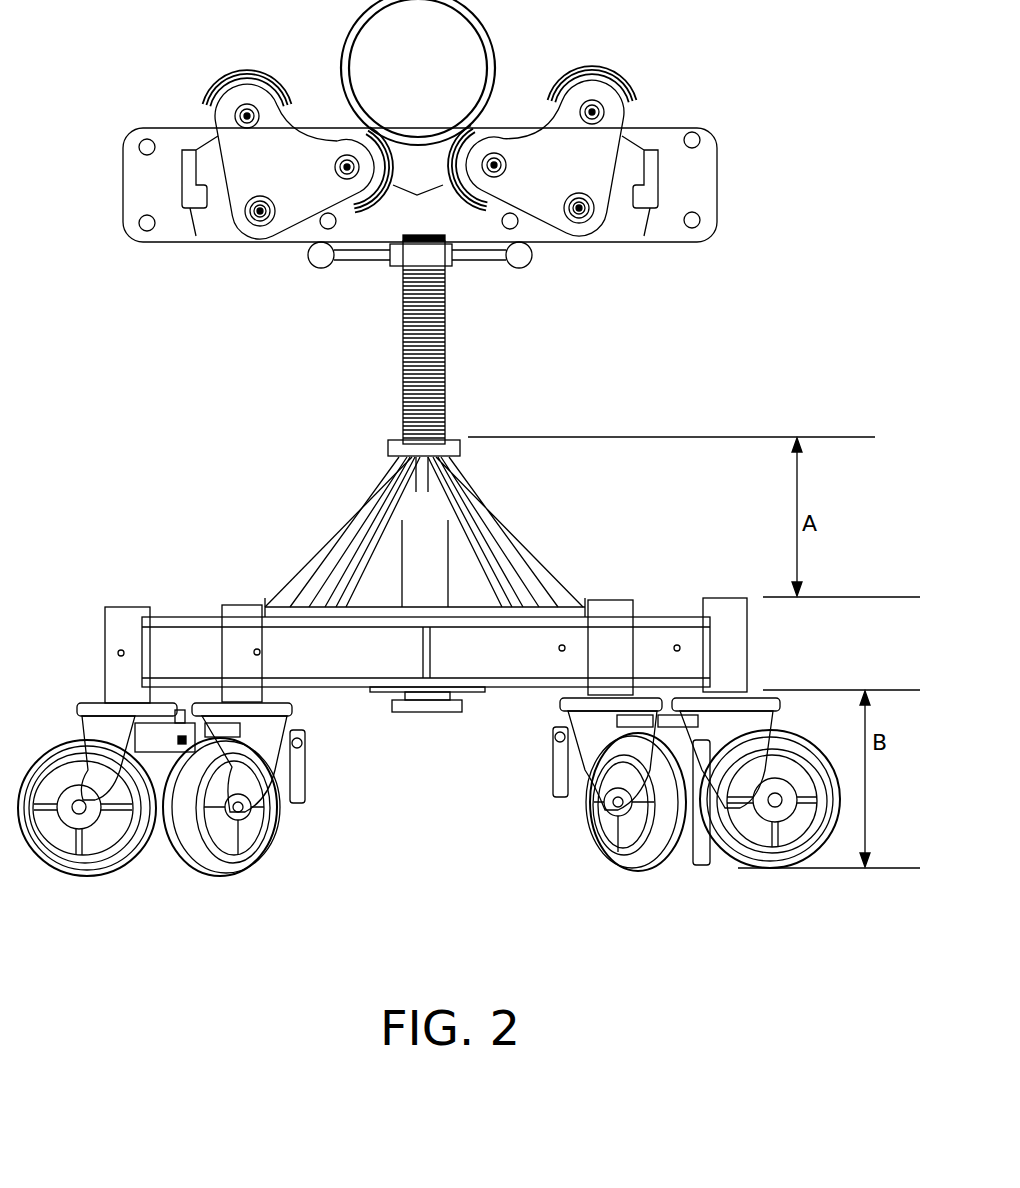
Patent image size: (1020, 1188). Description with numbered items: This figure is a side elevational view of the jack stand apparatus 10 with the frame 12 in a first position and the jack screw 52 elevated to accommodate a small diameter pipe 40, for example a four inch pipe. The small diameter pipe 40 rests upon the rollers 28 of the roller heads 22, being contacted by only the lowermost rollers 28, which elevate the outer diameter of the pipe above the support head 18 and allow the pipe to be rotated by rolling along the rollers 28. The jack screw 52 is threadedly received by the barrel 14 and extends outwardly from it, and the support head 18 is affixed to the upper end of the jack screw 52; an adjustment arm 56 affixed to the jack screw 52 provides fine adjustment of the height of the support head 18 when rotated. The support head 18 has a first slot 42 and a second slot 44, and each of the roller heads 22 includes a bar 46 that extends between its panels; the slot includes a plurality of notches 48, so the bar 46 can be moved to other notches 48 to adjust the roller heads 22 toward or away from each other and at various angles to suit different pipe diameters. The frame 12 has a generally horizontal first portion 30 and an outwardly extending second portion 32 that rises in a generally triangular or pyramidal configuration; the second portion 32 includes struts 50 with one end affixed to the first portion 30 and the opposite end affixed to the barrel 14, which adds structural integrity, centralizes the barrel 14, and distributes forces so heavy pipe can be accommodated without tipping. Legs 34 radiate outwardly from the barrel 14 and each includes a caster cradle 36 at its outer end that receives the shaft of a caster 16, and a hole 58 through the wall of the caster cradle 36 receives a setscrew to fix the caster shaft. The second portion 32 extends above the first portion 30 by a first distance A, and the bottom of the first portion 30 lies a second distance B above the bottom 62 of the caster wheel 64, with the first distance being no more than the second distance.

The jack stand apparatus 10 is at (688, 330).
The frame 12 is at (668, 612).
The barrel 14 is at (425, 537).
The caster 16 is at (128, 868).
The support head 18 is at (621, 242).
The roller heads 22 is at (419, 159).
The rollers 28 is at (333, 122).
The first portion 30 is at (426, 652).
The second portion 32 is at (318, 547).
The legs 34 is at (252, 612).
The caster cradle 36 is at (106, 635).
The small diameter pipe 40 is at (493, 36).
The first slot 42 is at (198, 148).
The second slot 44 is at (645, 148).
The bar 46 is at (259, 238).
The notches 48 is at (193, 238).
The struts 50 is at (383, 516).
The jack screw 52 is at (447, 356).
The adjustment arm 56 is at (522, 270).
The hole 58 is at (118, 656).
The bottom 62 is at (775, 868).
The caster wheel 64 is at (745, 852).